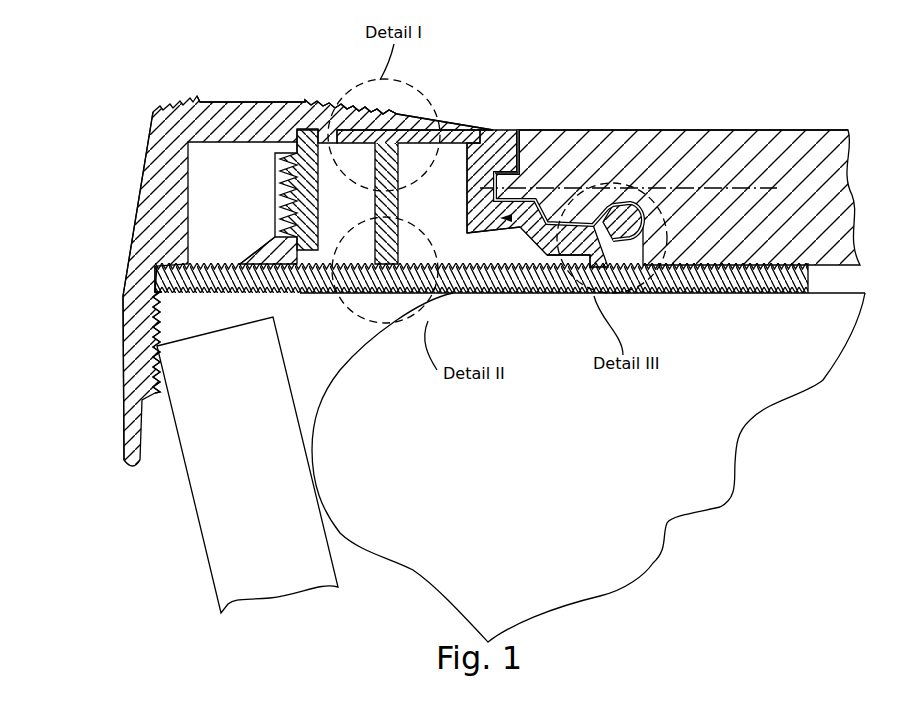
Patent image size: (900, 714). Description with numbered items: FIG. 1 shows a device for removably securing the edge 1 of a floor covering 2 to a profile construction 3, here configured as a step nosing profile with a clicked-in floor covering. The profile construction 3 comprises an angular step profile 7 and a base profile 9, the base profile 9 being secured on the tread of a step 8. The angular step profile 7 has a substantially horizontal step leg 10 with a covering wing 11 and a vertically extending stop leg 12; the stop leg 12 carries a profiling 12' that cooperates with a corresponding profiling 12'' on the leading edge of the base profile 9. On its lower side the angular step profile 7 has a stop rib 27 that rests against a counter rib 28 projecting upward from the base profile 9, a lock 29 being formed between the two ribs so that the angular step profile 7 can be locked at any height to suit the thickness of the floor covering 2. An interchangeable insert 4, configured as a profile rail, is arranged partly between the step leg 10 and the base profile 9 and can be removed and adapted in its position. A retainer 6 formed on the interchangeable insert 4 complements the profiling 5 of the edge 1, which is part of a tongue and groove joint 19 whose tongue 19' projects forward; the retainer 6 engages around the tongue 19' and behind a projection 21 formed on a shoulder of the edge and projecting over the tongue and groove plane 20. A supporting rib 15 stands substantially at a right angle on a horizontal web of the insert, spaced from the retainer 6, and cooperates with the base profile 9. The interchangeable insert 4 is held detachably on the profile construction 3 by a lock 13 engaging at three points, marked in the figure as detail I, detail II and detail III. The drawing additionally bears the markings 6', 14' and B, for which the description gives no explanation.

The edge 1 is at (571, 106).
The floor covering 2 is at (714, 102).
The profile construction 3 is at (185, 72).
The interchangeable insert 4 is at (499, 250).
The profiling 5 is at (577, 200).
The retainer 6 is at (569, 232).
The clip upper leg 6' is at (520, 127).
The angular step profile 7 is at (122, 148).
The step 8 is at (560, 469).
The base profile 9 is at (290, 298).
The step leg 10 is at (304, 96).
The covering wing 11 is at (455, 118).
The stop leg 12 is at (92, 338).
The profiling 12' is at (117, 341).
The profiling 12'' is at (188, 296).
The lock 13 is at (358, 325).
The gap edge 14' is at (447, 188).
The supporting rib 15 is at (383, 193).
The tongue and groove joint 19 is at (479, 228).
The tongue 19' is at (537, 161).
The tongue and groove plane 20 is at (770, 188).
The projection 21 is at (600, 205).
The stop rib 27 is at (320, 165).
The counter rib 28 is at (285, 153).
The lock 29 is at (278, 213).
The region B is at (361, 78).